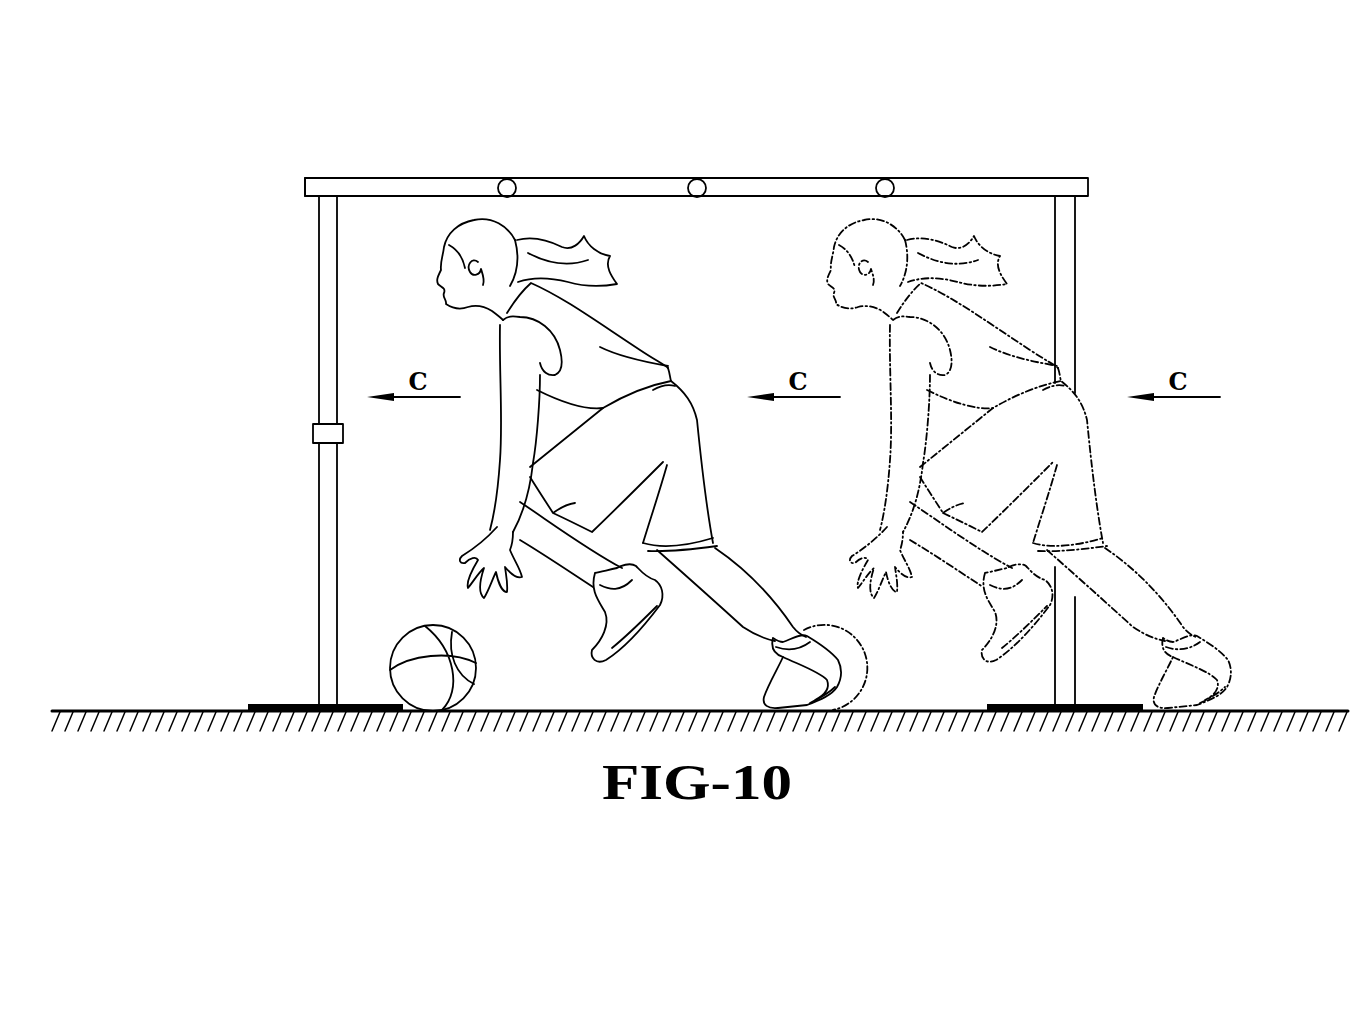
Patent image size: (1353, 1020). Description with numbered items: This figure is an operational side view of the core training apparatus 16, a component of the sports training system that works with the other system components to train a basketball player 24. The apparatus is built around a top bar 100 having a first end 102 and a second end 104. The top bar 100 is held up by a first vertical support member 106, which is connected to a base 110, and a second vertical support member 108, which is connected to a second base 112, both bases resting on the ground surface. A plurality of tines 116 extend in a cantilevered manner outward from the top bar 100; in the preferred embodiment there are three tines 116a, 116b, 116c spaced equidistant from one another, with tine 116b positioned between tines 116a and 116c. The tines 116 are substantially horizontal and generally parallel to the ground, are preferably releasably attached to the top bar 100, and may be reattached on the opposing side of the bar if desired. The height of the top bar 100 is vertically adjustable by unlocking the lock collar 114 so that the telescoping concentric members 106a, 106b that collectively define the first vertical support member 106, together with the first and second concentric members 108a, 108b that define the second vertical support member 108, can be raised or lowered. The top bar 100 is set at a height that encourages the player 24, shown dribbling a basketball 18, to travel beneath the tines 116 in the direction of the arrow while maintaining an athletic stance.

The core training apparatus 16 is at (304, 310).
The basketball 18 is at (405, 630).
The basketball player 24 is at (630, 343).
The top bar 100 is at (388, 177).
The first end 102 is at (1081, 177).
The second end 104 is at (315, 177).
The first vertical support member 106 is at (1077, 310).
The telescoping concentric member 106a is at (1076, 270).
The telescoping concentric member 106b is at (1053, 688).
The second vertical support member 108 is at (318, 525).
The first concentric member 108a is at (319, 355).
The second concentric member 108b is at (318, 580).
The base 110 is at (1122, 703).
The second base 112 is at (287, 703).
The lock collar 114 is at (313, 437).
The tines 116 is at (696, 147).
The tine 116a is at (507, 178).
The tine 116b is at (697, 178).
The tine 116c is at (885, 178).